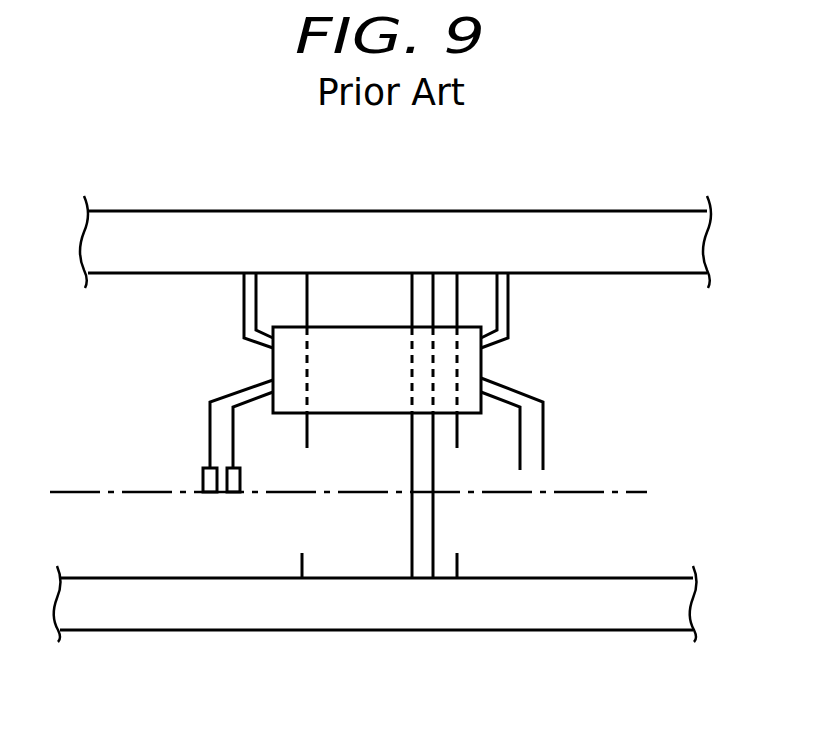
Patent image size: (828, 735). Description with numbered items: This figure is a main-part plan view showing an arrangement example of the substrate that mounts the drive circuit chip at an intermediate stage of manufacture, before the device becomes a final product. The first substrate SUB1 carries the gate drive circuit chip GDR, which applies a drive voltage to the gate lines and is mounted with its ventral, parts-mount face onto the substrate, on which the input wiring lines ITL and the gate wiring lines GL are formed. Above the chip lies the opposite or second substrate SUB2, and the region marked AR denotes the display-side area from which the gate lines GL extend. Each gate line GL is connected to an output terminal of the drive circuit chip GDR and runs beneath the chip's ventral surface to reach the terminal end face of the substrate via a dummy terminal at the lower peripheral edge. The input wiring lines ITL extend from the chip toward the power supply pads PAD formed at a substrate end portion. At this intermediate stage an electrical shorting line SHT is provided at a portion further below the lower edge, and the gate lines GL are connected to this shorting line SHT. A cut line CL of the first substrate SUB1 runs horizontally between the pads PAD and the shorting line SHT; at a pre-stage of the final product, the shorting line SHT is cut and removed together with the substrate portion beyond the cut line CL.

The active region AR is at (380, 176).
The opposite substrate SUB2 is at (395, 242).
The substrate SUB1 is at (688, 352).
The gate drive circuit chip GDR is at (377, 370).
The gate lines GL is at (227, 298).
The input wiring lines ITL is at (194, 428).
The power supply pads PAD is at (203, 482).
The cut line CL is at (370, 490).
The electrical shorting line SHT is at (627, 578).